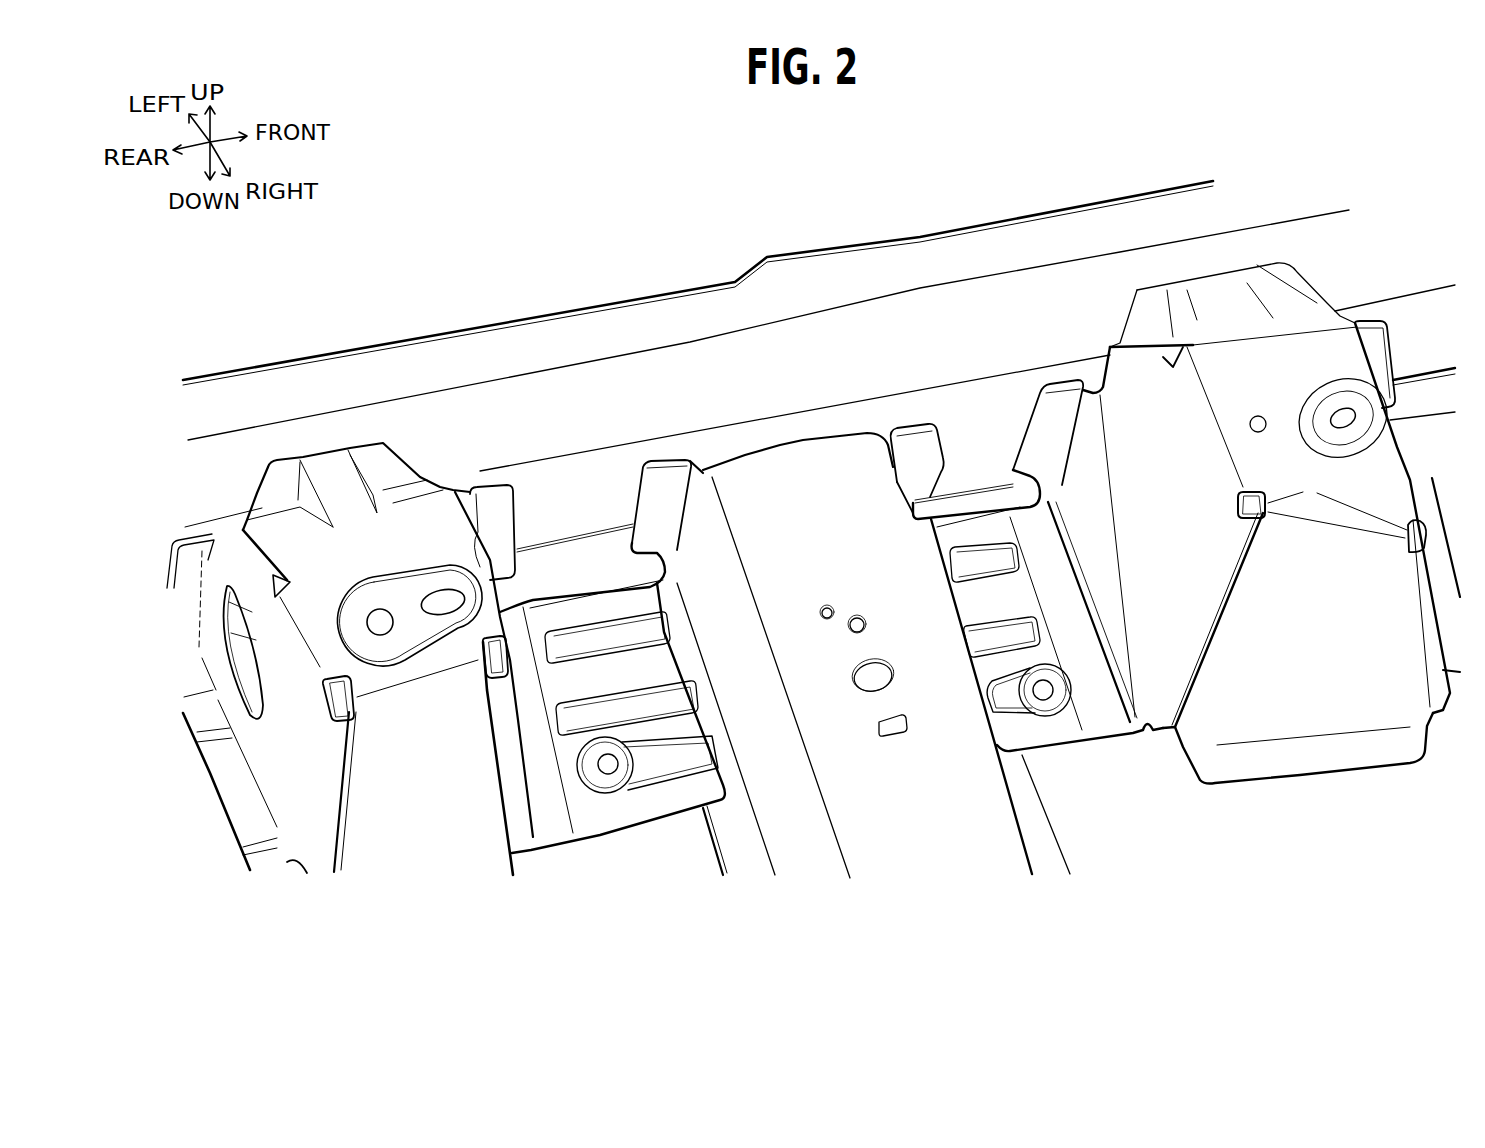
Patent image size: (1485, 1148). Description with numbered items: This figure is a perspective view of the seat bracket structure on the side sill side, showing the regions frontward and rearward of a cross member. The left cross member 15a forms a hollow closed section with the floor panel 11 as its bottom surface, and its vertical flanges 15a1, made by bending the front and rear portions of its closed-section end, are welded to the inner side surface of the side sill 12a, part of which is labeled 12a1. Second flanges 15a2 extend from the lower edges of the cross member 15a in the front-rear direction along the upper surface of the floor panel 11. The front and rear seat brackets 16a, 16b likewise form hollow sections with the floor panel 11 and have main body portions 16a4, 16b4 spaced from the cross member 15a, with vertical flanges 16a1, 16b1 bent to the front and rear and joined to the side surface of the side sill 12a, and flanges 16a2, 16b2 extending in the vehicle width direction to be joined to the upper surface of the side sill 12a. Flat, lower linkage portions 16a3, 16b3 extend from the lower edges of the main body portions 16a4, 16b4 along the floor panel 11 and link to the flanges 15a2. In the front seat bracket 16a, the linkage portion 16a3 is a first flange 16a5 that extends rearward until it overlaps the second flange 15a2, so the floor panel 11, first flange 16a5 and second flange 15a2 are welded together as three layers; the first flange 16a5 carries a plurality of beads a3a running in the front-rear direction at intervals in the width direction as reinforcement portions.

The floor panel 11 is at (1166, 812).
The side sill 12a is at (1045, 293).
The side sill flange 12a1 is at (970, 410).
The left cross member 15a is at (787, 482).
The vertical flange 15a1 is at (663, 490).
The second flange 15a2 is at (733, 843).
The front seat bracket 16a is at (1163, 467).
The vertical flange 16a1 is at (1063, 400).
The flange 16a2 is at (1211, 295).
The linkage portion 16a3 is at (1044, 700).
The main body portion 16a4 is at (1343, 640).
The first flange 16a5 is at (1097, 667).
The rear seat bracket 16b is at (405, 548).
The vertical flange 16b1 is at (195, 562).
The flange 16b2 is at (331, 470).
The linkage portion 16b3 is at (590, 678).
The main body portion 16b4 is at (433, 790).
The bead a3a is at (968, 570).